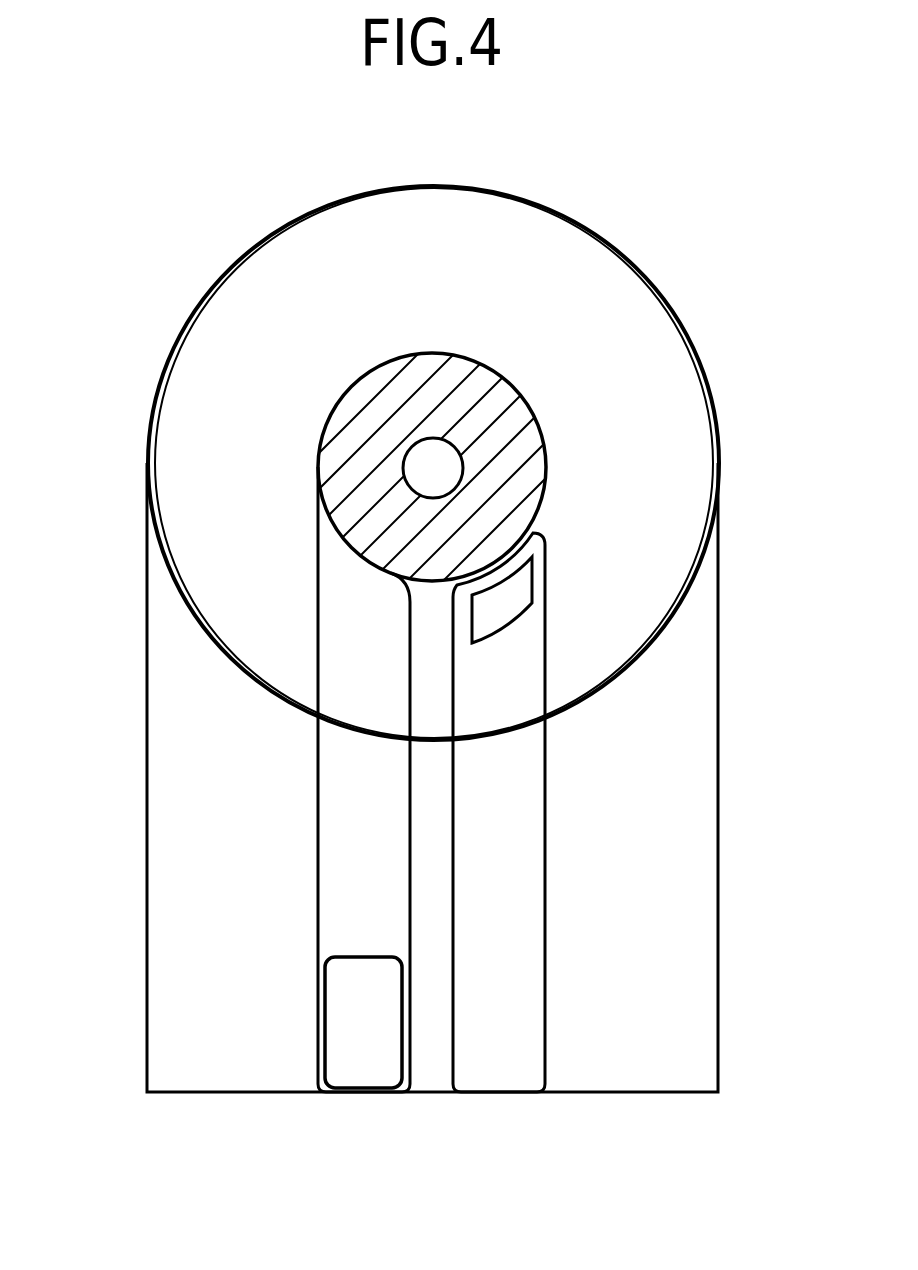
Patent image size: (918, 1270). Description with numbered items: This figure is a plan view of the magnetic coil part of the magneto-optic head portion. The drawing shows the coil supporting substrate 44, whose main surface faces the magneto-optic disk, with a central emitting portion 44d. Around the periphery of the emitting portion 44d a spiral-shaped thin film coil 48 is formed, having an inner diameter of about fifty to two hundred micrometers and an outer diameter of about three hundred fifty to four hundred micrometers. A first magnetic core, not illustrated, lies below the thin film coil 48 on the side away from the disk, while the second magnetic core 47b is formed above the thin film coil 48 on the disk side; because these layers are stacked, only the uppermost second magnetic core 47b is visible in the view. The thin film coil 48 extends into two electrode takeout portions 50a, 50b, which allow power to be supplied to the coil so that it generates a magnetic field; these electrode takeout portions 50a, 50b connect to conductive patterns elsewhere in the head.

The coil supporting substrate 44 is at (692, 345).
The emitting portion 44d is at (436, 446).
The second magnetic core 47b is at (510, 445).
The thin film coil 48 is at (320, 460).
The electrode takeout portion 50a is at (340, 865).
The electrode takeout portion 50b is at (525, 862).